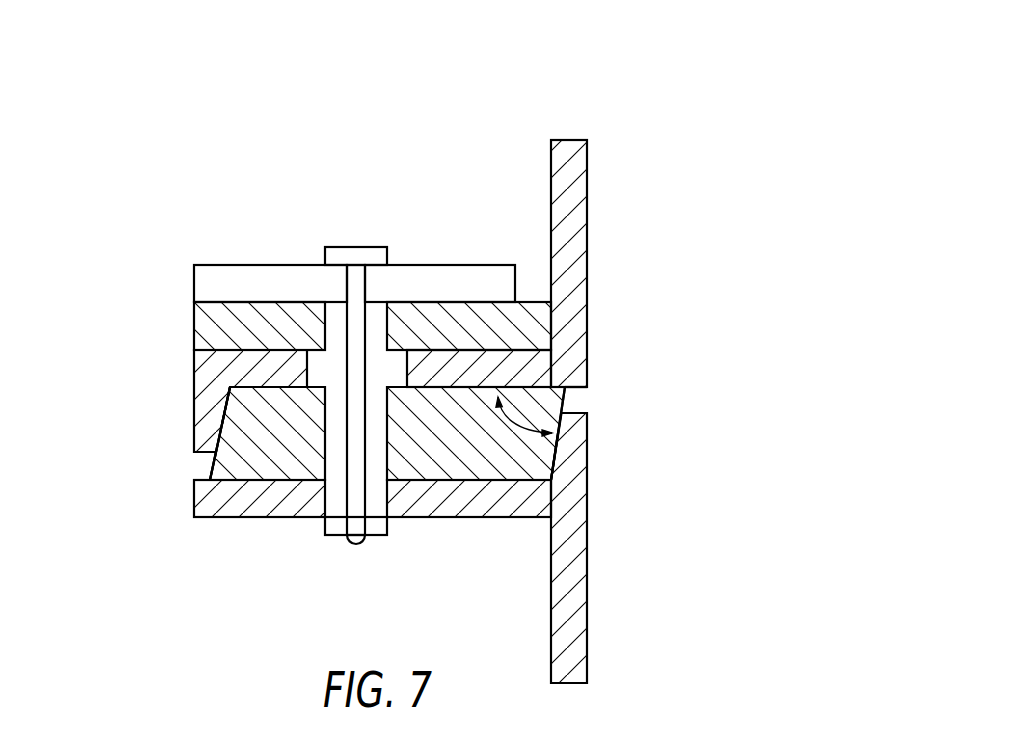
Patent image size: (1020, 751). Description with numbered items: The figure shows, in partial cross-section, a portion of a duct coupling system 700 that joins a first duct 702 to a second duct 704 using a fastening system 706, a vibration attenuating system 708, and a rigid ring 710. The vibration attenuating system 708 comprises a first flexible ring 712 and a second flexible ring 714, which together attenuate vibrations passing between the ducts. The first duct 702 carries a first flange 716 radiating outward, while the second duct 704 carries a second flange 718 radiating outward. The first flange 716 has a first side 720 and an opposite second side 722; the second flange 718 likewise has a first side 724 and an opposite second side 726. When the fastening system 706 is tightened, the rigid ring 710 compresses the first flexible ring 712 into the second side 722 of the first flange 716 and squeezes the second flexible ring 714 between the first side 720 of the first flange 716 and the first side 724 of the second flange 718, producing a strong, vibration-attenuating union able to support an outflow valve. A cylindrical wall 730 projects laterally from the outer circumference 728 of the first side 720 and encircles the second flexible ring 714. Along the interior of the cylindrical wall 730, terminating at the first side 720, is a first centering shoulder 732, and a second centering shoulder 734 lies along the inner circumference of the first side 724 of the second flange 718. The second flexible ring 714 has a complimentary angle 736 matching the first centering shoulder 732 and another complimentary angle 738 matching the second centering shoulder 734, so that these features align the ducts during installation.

The duct coupling system 700 is at (705, 73).
The first duct 702 is at (638, 232).
The second duct 704 is at (613, 623).
The fastening system 706 is at (355, 247).
The vibration attenuating system 708 is at (188, 325).
The rigid ring 710 is at (277, 296).
The first flexible ring 712 is at (277, 338).
The second flexible ring 714 is at (299, 443).
The first flange 716 is at (277, 381).
The second flange 718 is at (286, 511).
The first side of the first flange 720 is at (566, 447).
The second side of the first flange 722 is at (503, 337).
The first side of the second flange 724 is at (527, 418).
The second side of the second flange 726 is at (484, 522).
The outer circumference of the first side of the first flange 728 is at (188, 365).
The cylindrical wall 730 is at (220, 416).
The first centering shoulder 732 is at (228, 494).
The second centering shoulder 734 is at (508, 468).
The complimentary angle 736 is at (233, 410).
The complimentary angle 738 is at (538, 420).